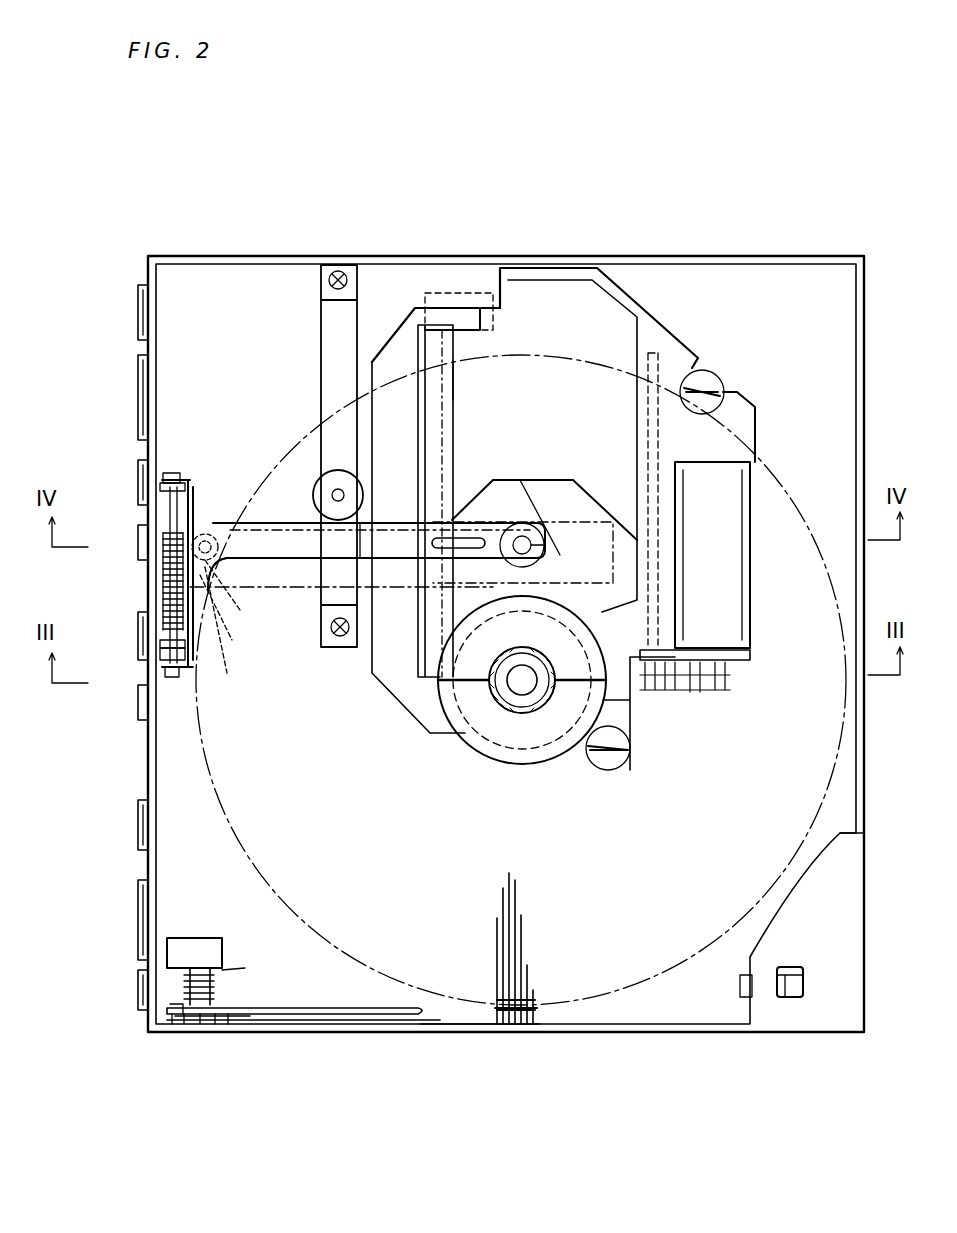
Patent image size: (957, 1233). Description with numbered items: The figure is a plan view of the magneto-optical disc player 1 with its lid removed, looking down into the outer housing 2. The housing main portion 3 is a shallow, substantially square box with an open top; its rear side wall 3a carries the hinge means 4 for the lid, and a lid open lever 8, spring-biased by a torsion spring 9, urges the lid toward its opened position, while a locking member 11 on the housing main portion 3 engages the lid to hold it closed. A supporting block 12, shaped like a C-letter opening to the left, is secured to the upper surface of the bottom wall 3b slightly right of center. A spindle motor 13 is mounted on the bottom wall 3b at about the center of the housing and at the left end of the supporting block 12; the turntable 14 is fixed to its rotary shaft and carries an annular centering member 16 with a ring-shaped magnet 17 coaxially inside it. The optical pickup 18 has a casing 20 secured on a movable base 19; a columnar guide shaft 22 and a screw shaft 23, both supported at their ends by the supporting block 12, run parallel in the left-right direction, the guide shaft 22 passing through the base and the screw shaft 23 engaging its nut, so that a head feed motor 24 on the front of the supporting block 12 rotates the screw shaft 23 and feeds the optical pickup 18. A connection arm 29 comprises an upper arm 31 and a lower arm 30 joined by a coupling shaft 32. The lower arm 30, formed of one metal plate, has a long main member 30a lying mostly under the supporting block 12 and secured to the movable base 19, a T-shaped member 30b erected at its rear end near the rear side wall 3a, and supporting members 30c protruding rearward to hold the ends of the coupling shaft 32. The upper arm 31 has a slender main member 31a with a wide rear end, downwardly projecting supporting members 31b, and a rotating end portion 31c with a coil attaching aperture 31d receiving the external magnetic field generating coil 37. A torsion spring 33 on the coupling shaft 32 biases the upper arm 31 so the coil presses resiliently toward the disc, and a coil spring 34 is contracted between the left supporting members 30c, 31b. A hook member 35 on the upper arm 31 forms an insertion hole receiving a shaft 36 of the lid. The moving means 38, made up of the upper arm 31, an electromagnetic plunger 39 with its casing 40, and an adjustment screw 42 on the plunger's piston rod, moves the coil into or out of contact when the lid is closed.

The magneto-optical disc player 1 is at (782, 172).
The outer housing 2 is at (770, 470).
The housing main portion 3 is at (602, 1032).
The rear side wall 3a is at (148, 758).
The bottom wall 3b is at (480, 1032).
The hinge means 4 is at (140, 828).
The lid open lever 8 is at (320, 1024).
The torsion spring 9 is at (215, 985).
The locking member 11 is at (787, 1000).
The supporting block 12 is at (660, 330).
The spindle motor 13 is at (500, 810).
The turntable 14 is at (480, 752).
The centering member 16 is at (537, 700).
The ring-shaped magnet 17 is at (496, 708).
The optical pickup 18 is at (548, 385).
The movable base 19 is at (500, 480).
The casing 20 is at (536, 520).
The guide shaft 22 is at (428, 432).
The screw shaft 23 is at (660, 438).
The head feed motor 24 is at (752, 586).
The connection arm 29 is at (203, 365).
The lower arm 30 is at (267, 520).
The main member 30a is at (300, 596).
The T-shaped member 30b is at (236, 636).
The supporting members 30c is at (185, 498).
The upper arm 31 is at (302, 522).
The main member 31a is at (375, 538).
The supporting members 31b is at (170, 490).
The rotating end portion 31c is at (545, 535).
The coil attaching aperture 31d is at (546, 558).
The coupling shaft 32 is at (197, 520).
The torsion spring 33 is at (180, 585).
The coil spring 34 is at (185, 655).
The hook member 35 is at (464, 535).
The shaft 36 is at (456, 376).
The external magnetic field generating coil 37 is at (530, 535).
The moving means 38 is at (300, 615).
The electromagnetic plunger 39 is at (216, 600).
The casing 40 is at (230, 620).
The adjustment screw 42 is at (210, 535).